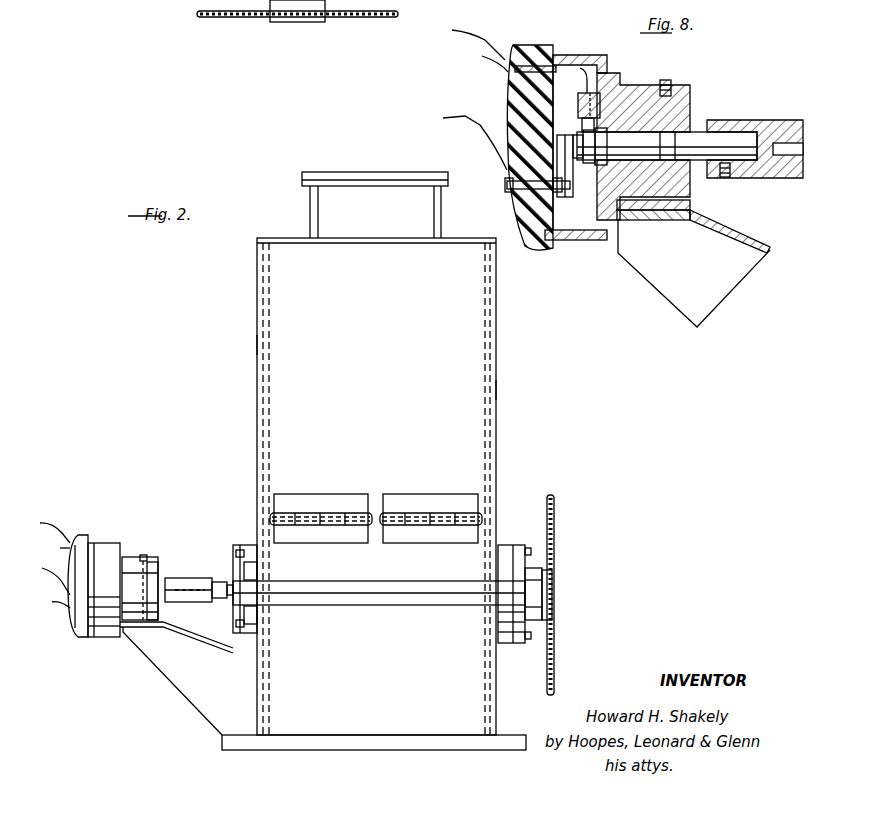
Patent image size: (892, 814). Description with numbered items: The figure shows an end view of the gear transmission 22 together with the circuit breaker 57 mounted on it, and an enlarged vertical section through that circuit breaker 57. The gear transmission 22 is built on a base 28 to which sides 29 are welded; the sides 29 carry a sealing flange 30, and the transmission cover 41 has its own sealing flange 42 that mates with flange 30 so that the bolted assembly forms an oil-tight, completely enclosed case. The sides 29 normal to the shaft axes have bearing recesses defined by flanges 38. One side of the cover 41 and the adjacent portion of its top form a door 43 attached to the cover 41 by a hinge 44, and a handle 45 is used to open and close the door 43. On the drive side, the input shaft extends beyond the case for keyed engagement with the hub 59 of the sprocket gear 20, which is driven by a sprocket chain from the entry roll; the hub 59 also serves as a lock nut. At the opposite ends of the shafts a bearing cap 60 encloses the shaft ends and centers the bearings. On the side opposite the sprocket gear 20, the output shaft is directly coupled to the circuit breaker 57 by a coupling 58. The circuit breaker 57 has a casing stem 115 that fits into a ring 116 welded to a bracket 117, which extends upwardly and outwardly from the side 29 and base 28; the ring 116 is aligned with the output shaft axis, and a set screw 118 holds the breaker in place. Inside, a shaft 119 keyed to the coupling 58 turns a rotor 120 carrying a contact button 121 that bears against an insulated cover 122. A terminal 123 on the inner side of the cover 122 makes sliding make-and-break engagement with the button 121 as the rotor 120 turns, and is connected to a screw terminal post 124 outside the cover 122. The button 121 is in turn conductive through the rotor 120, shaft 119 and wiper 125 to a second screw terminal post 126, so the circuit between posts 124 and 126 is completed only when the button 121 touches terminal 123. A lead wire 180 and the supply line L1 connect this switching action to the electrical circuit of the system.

In FIG. 2, the sprocket gear 20 is at (560, 525).
In FIG. 2, the gear transmission 22 is at (496, 333).
In FIG. 2, the base 28 is at (327, 745).
In FIG. 2, the sides 29 is at (470, 701).
In FIG. 2, the sealing flange 30 is at (422, 600).
In FIG. 2, the flanges 38 is at (497, 652).
In FIG. 2, the transmission cover 41 is at (496, 388).
In FIG. 2, the sealing flange 42 is at (340, 588).
In FIG. 2, the door 43 is at (272, 344).
In FIG. 2, the hinge 44 is at (408, 513).
In FIG. 2, the handle 45 is at (340, 177).
In FIG. 2, the circuit breaker 57 is at (105, 548).
In FIG. 8, the circuit breaker 57 is at (590, 56).
In FIG. 2, the coupling 58 is at (192, 578).
In FIG. 8, the coupling 58 is at (770, 127).
In FIG. 2, the hub 59 is at (545, 568).
In FIG. 8, the bearing cap 60 is at (547, 0).
In FIG. 8, the casing stem 115 is at (636, 107).
In FIG. 2, the ring 116 is at (155, 565).
In FIG. 8, the ring 116 is at (680, 86).
In FIG. 2, the bracket 117 is at (166, 662).
In FIG. 8, the bracket 117 is at (663, 273).
In FIG. 2, the set screw 118 is at (144, 555).
In FIG. 8, the set screw 118 is at (670, 80).
In FIG. 8, the shaft 119 is at (685, 143).
In FIG. 8, the rotor 120 is at (536, 160).
In FIG. 8, the contact button 121 is at (557, 197).
In FIG. 8, the insulated cover 122 is at (520, 80).
In FIG. 8, the terminal 123 is at (548, 235).
In FIG. 2, the screw terminal post 124 is at (48, 612).
In FIG. 8, the screw terminal post 124 is at (505, 192).
In FIG. 8, the wiper 125 is at (582, 127).
In FIG. 2, the screw terminal post 126 is at (47, 547).
In FIG. 8, the screw terminal post 126 is at (475, 58).
In FIG. 2, the electrical lead wire 180 is at (48, 519).
In FIG. 8, the electrical lead wire 180 is at (459, 41).
In FIG. 2, the line L1 is at (44, 580).
In FIG. 8, the line L1 is at (458, 139).